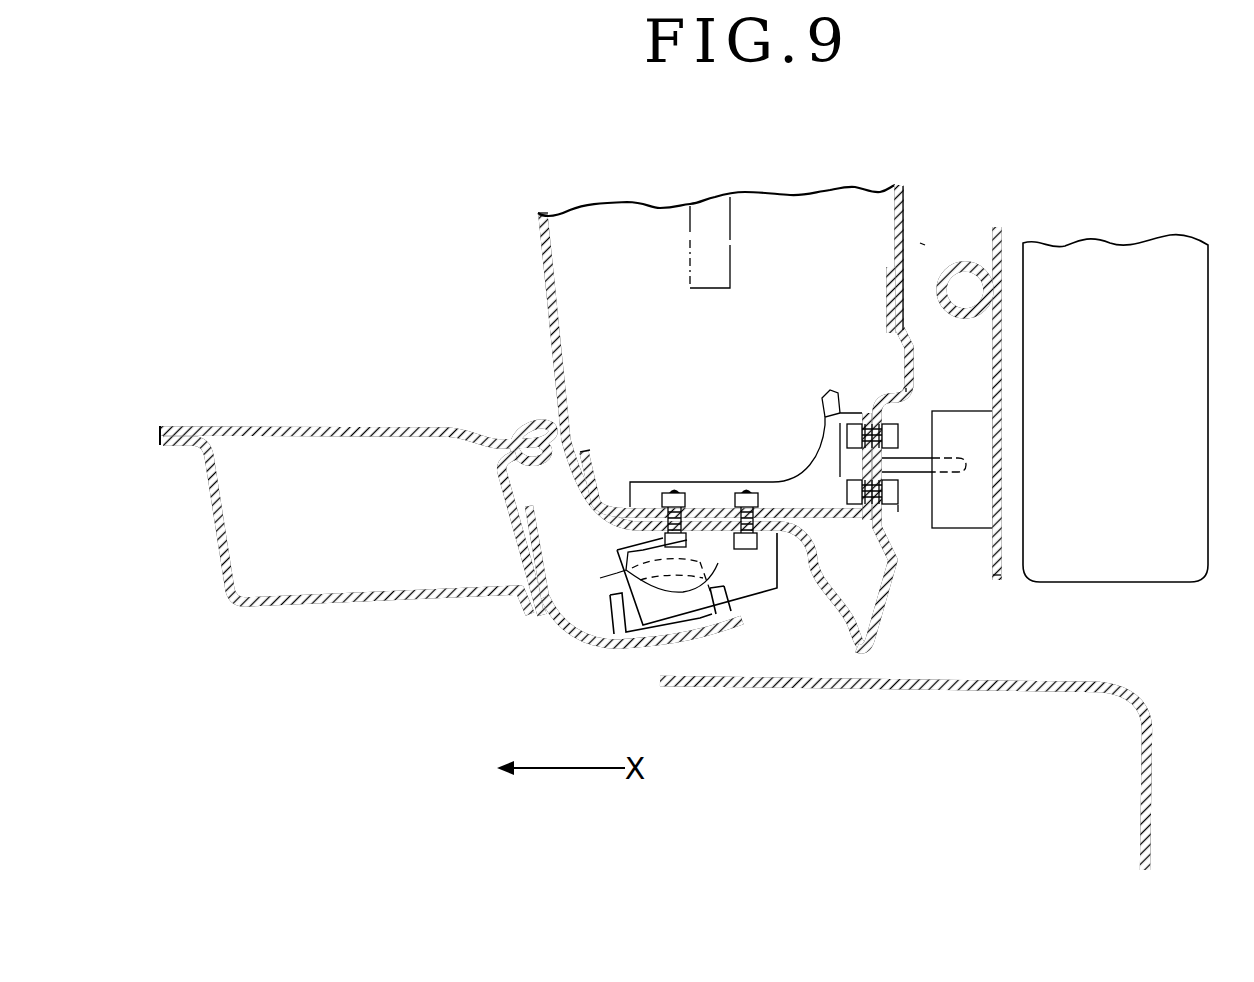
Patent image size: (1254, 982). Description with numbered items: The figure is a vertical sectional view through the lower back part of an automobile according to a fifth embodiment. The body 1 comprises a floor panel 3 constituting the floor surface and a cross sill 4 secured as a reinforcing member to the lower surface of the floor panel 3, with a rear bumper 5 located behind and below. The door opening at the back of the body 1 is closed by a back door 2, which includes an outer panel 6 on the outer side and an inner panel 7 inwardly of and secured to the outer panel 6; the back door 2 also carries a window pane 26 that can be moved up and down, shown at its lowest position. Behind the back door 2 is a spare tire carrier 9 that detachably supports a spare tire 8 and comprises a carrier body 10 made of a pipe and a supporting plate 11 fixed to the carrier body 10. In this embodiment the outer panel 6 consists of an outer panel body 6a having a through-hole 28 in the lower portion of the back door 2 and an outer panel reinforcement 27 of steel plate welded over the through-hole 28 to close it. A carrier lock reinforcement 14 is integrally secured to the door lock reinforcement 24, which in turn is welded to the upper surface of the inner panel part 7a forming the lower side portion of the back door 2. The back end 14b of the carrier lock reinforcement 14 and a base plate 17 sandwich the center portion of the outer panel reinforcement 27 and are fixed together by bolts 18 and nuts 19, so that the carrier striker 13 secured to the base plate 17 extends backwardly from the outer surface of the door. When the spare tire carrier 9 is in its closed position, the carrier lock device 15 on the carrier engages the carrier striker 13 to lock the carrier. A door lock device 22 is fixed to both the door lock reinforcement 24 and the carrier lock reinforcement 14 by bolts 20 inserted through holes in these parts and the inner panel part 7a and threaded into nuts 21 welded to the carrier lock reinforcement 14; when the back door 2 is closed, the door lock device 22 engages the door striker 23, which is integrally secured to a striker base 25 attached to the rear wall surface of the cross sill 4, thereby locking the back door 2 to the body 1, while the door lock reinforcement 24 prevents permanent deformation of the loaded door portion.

The body 1 is at (356, 505).
The back door 2 is at (924, 240).
The floor panel 3 is at (372, 428).
The cross sill 4 is at (333, 606).
The rear bumper 5 is at (1160, 790).
The outer panel 6 is at (900, 185).
The outer panel body 6a is at (905, 215).
The inner panel 7 is at (542, 322).
The inner panel part 7a is at (718, 507).
The spare tire 8 is at (1212, 395).
The spare tire carrier 9 is at (991, 234).
The carrier body 10 is at (978, 318).
The supporting plate 11 is at (1003, 560).
The carrier striker 13 is at (910, 485).
The carrier lock reinforcement 14 is at (801, 460).
The back wall of carrier lock reinforcement 14b is at (868, 412).
The carrier lock device 15 is at (963, 530).
The base plate 17 is at (917, 460).
The bolts 18 is at (878, 424).
The nuts 19 is at (835, 417).
The bolts 20 is at (612, 574).
The nuts 21 is at (676, 490).
The door lock device 22 is at (762, 592).
The door striker 23 is at (613, 650).
The door lock reinforcement 24 is at (598, 476).
The striker base 25 is at (560, 632).
The window pane 26 is at (688, 235).
The outer panel reinforcement 27 is at (885, 288).
The through-hole 28 is at (920, 390).